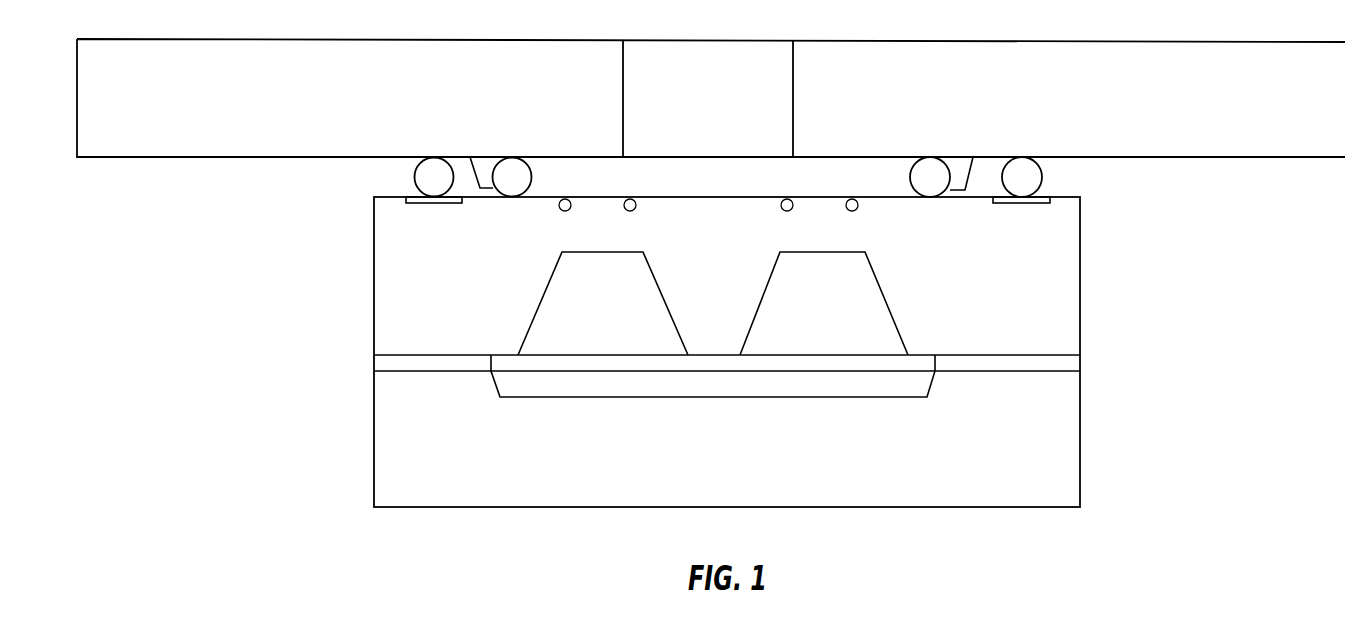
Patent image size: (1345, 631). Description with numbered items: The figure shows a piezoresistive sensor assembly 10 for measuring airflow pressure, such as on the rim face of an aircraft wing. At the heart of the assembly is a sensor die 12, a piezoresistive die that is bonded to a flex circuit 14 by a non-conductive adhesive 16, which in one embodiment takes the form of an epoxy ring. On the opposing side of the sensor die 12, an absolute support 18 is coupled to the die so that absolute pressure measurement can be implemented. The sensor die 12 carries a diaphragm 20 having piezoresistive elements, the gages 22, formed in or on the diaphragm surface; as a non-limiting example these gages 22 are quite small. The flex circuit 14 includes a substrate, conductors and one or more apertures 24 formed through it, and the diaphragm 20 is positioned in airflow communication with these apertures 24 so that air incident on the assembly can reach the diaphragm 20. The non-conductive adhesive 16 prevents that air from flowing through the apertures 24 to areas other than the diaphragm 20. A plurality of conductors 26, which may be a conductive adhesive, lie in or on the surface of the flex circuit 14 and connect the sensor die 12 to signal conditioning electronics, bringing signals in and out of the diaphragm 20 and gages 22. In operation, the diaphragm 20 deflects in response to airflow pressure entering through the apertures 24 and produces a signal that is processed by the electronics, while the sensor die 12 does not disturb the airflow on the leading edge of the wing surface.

The piezoresistive sensor assembly 10 is at (1226, 318).
The sensor die 12 is at (1080, 288).
The flex circuit 14 is at (1227, 42).
The non-conductive adhesive 16 is at (932, 157).
The absolute support 18 is at (1080, 442).
The diaphragm 20 is at (603, 225).
The gages 22 is at (558, 203).
The apertures 24 is at (707, 63).
The conductors 26 is at (415, 177).